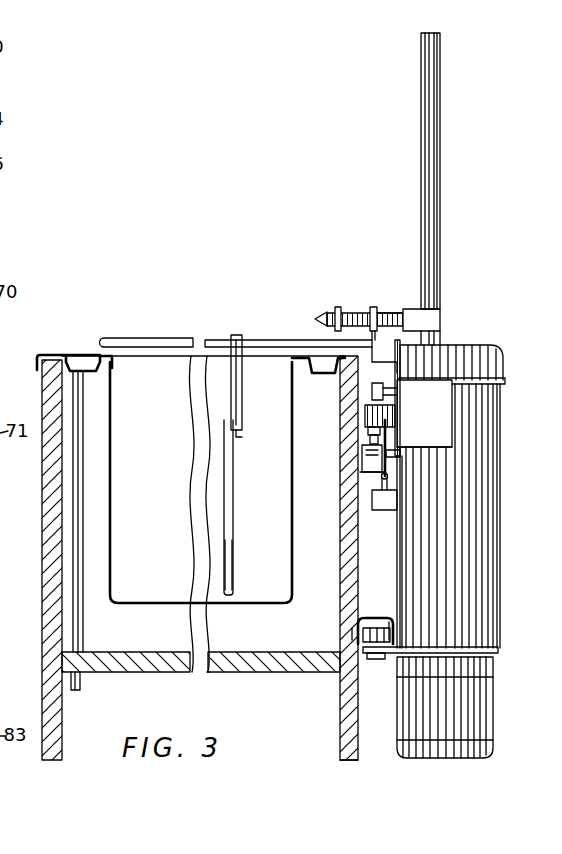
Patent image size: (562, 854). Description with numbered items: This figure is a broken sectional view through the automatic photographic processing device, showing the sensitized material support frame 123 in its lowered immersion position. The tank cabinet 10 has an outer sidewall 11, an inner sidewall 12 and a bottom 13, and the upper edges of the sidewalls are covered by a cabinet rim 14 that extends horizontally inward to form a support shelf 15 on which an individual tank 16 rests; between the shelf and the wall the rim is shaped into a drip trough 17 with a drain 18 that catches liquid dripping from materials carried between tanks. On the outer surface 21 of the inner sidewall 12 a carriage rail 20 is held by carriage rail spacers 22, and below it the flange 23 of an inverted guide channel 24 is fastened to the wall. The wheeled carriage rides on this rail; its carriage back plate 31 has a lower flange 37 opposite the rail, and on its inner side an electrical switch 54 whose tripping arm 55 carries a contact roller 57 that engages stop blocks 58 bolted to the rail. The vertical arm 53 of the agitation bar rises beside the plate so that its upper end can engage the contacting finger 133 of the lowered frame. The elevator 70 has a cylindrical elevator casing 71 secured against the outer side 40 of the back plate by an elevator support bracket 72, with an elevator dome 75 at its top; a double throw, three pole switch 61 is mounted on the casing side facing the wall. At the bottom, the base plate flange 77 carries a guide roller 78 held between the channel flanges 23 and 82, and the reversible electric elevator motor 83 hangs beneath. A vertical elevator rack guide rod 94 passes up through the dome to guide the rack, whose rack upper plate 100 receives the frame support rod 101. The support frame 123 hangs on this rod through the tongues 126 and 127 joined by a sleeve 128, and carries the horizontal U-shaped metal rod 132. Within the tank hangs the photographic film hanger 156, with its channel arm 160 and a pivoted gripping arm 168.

The cabinet 10 is at (280, 680).
The outer sidewall 11 is at (50, 518).
The inner sidewall 12 is at (348, 732).
The bottom 13 is at (148, 662).
The cabinet rim 14 is at (44, 352).
The support shelf 15 is at (99, 366).
The tank 16 is at (148, 352).
The drip trough 17 is at (81, 362).
The drain 18 is at (85, 483).
The carriage rail 20 is at (386, 468).
The outer surface 21 is at (359, 756).
The carriage rail spacer 22 is at (361, 471).
The flange 23 is at (357, 633).
The inverted guide channel 24 is at (374, 614).
The carriage back plate 31 is at (402, 397).
The flange 37 is at (389, 456).
The outer side 40 is at (406, 431).
The vertical arm 53 is at (401, 368).
The electrical switch 54 is at (372, 410).
The tripping arm 55 is at (368, 430).
The contact roller 57 is at (372, 439).
The stop block 58 is at (374, 458).
The double throw, three pole switch 61 is at (383, 508).
The elevator 70 is at (484, 340).
The elevator casing 71 is at (500, 474).
The elevator support bracket 72 is at (443, 395).
The elevator dome 75 is at (500, 352).
The flange 77 is at (388, 655).
The guide roller 78 is at (392, 636).
The flange 82 is at (394, 625).
The electric elevator motor 83 is at (476, 728).
The elevator rack guide rod 94 is at (428, 188).
The rack upper plate 100 is at (434, 312).
The frame support rod 101 is at (388, 312).
The sensitized material support frame 123 is at (277, 335).
The tongue 126 is at (322, 312).
The tongue 127 is at (374, 306).
The sleeve 128 is at (355, 309).
The U-shaped metal rod 132 is at (181, 340).
The contacting finger 133 is at (394, 360).
The photographic film hanger 156 is at (236, 546).
The channel arm 160 is at (230, 464).
The gripping arm 168 is at (244, 379).